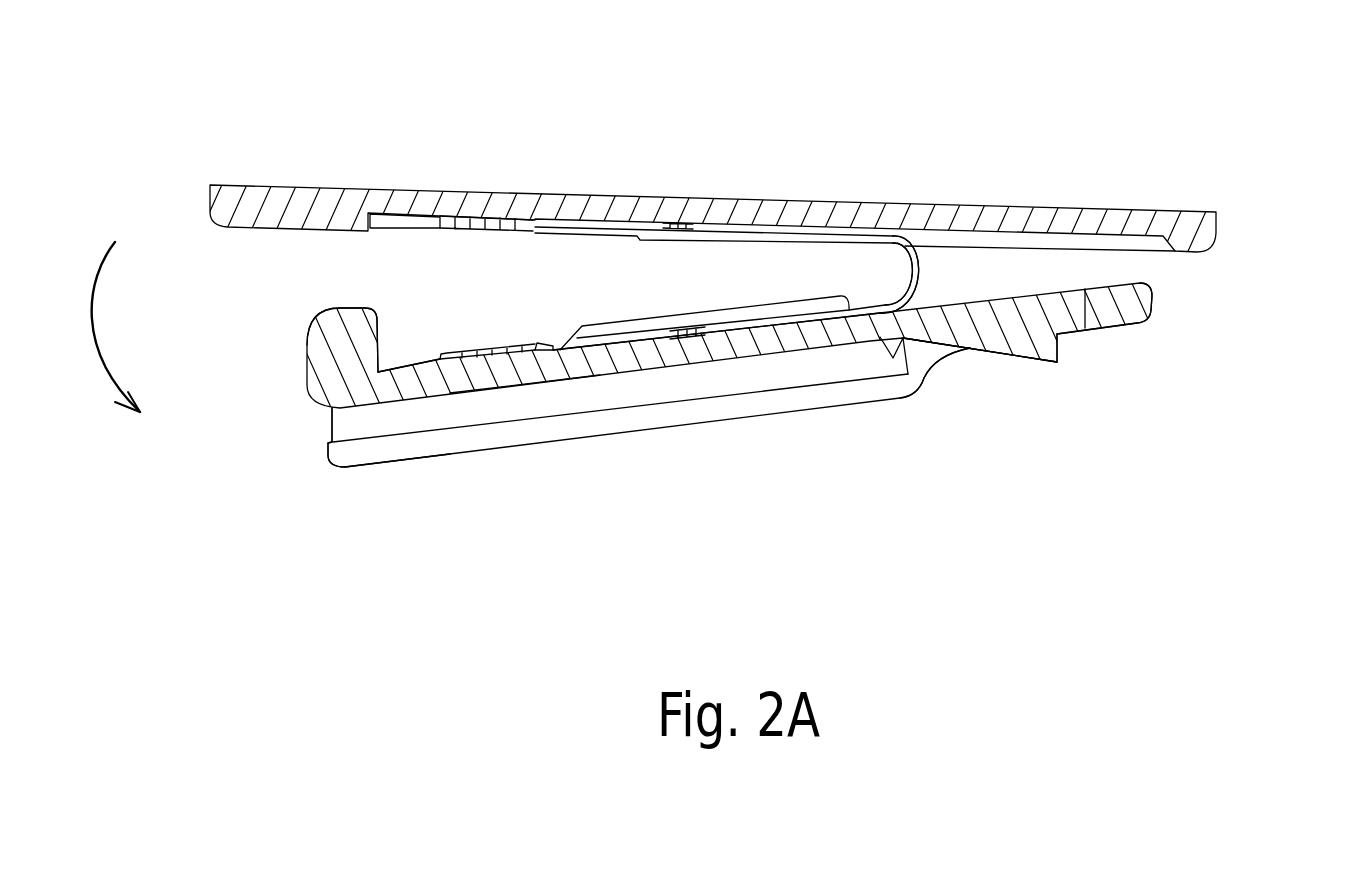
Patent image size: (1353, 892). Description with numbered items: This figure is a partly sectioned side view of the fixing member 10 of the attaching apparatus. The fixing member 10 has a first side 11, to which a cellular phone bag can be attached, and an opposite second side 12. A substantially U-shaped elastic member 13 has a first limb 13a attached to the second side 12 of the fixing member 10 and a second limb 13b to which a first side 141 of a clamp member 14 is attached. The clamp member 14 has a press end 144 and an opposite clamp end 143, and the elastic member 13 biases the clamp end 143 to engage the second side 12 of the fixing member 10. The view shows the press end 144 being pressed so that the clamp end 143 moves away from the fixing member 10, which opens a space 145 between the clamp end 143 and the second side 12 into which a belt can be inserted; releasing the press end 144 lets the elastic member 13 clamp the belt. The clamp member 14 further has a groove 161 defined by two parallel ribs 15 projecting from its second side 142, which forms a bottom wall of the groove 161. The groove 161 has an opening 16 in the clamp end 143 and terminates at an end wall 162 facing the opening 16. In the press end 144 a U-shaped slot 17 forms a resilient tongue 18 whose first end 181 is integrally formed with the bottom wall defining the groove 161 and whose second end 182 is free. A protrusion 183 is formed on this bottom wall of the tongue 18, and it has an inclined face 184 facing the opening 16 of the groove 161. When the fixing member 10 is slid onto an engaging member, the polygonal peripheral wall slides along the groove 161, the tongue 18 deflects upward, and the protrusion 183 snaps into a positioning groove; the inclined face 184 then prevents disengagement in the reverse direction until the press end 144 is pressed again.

The fixing member 10 is at (1090, 172).
The first side 11 is at (1187, 210).
The second side 12 is at (1175, 252).
The elastic member 13 is at (727, 282).
The first limb 13a is at (842, 242).
The second limb 13b is at (810, 320).
The clamp member 14 is at (743, 302).
The first side 141 is at (623, 358).
The second side 142 is at (527, 380).
The clamp end 143 is at (322, 365).
The press end 144 is at (1128, 318).
The space 145 is at (433, 282).
The ribs 15 is at (468, 447).
The opening 16 is at (615, 445).
The groove 161 is at (397, 420).
The end wall 162 is at (950, 352).
The U-shaped slot 17 is at (1013, 333).
The resilient tongue 18 is at (858, 282).
The first end 181 is at (697, 358).
The second end 182 is at (1017, 347).
The protrusion 183 is at (879, 282).
The inclined face 184 is at (871, 280).